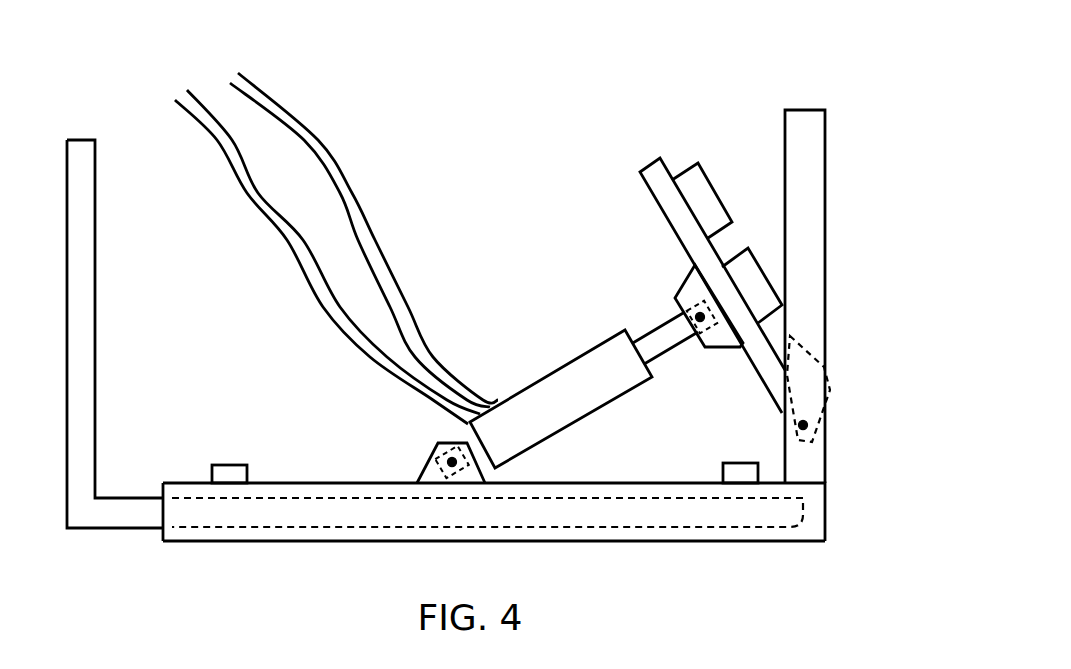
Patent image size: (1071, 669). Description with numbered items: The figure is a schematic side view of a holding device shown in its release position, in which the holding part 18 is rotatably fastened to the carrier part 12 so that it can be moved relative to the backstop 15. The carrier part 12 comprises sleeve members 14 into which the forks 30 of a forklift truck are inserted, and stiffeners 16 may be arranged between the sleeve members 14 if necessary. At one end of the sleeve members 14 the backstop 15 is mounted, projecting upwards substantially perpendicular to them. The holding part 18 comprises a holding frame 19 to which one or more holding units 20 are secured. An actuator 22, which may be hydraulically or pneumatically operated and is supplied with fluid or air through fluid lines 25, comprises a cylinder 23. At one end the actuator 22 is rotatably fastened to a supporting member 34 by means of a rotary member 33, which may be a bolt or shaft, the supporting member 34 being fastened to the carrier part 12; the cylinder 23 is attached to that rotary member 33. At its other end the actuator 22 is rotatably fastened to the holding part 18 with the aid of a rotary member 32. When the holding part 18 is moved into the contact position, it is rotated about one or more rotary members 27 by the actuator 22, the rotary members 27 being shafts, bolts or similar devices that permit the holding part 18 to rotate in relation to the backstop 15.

The carrier part 12 is at (840, 481).
The sleeve members 14 is at (790, 543).
The backstop 15 is at (826, 143).
The stiffeners 16 is at (232, 465).
The holding part 18 is at (737, 257).
The holding frame 19 is at (640, 172).
The holding units 20 is at (722, 197).
The actuator 22 is at (584, 367).
The cylinder 23 is at (522, 388).
The fluid lines 25 is at (300, 255).
The rotary member 27 is at (810, 422).
The forks 30 is at (113, 529).
The rotary member 32 is at (695, 333).
The rotary member 33 is at (442, 450).
The supporting member 34 is at (425, 472).